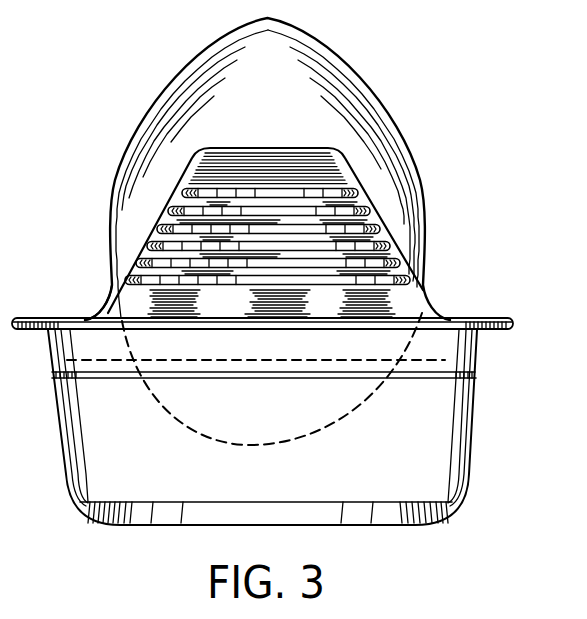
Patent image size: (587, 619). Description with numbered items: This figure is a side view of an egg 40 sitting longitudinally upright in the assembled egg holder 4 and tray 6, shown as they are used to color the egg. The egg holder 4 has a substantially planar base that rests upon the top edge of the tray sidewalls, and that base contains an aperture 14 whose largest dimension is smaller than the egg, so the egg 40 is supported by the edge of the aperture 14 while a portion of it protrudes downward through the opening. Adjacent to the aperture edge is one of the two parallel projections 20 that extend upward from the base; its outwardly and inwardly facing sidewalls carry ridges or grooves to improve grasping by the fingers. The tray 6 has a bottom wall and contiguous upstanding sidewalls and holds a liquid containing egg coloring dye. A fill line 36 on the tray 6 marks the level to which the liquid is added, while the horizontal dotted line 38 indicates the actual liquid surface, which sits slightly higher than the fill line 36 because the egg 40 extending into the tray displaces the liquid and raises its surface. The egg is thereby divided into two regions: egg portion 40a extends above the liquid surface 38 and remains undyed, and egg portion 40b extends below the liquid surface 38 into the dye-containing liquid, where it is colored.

The egg holder 4 is at (432, 306).
The tray 6 is at (467, 465).
The aperture 14 is at (118, 292).
The projection 20 is at (347, 172).
The fill line 36 is at (433, 378).
The liquid surface 38 is at (447, 359).
The egg 40 is at (397, 108).
The egg portion 40a is at (300, 62).
The egg portion 40b is at (200, 417).